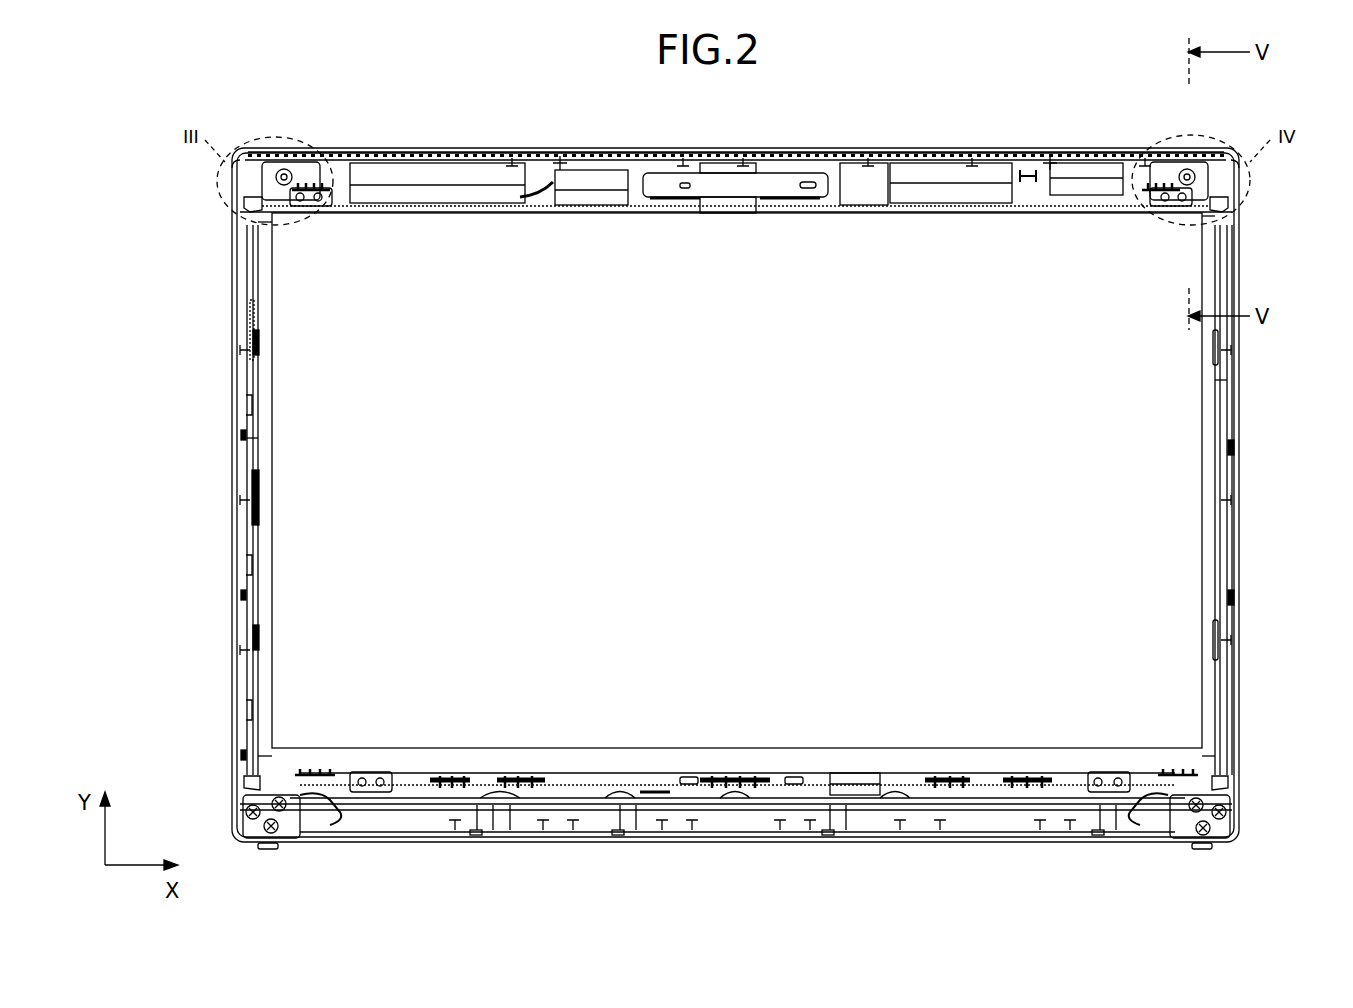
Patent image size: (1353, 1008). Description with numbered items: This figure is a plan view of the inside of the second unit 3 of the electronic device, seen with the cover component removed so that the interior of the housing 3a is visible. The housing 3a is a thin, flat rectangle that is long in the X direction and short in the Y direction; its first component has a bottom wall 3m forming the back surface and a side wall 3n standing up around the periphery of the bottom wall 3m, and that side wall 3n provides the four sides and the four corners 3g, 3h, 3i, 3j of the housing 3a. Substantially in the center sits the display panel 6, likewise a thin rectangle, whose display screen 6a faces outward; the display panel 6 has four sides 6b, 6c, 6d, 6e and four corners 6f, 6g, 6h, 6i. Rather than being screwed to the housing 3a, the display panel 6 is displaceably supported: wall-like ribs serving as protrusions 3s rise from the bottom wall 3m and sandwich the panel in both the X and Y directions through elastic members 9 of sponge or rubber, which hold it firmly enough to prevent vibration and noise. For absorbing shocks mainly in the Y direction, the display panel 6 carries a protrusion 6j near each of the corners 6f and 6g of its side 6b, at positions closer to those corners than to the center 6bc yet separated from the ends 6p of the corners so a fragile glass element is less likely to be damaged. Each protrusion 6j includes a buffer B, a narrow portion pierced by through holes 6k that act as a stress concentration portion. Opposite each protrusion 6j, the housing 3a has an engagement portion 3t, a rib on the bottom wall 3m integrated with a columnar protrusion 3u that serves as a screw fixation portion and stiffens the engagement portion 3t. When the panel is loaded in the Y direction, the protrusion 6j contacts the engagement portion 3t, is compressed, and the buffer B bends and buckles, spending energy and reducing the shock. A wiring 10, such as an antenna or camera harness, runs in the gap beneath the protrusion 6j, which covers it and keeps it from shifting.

The second unit 3 is at (416, 100).
The housing 3a is at (864, 148).
The corner 3g is at (246, 152).
The corner 3h is at (1234, 152).
The corner 3i is at (1236, 843).
The corner 3j is at (233, 843).
The bottom wall 3m is at (1028, 170).
The side wall 3n is at (494, 152).
The protrusion 3s is at (648, 190).
The engagement portion 3t is at (306, 184).
The protrusion 3u is at (284, 172).
The display panel 6 is at (1232, 291).
The display screen 6a is at (1185, 468).
The side 6b is at (574, 192).
The center 6bc is at (723, 214).
The side 6c is at (1215, 380).
The side 6d is at (604, 790).
The side 6e is at (252, 438).
The corner 6f is at (265, 222).
The corner 6g is at (1210, 216).
The corner 6h is at (1205, 756).
The corner 6i is at (268, 756).
The protrusion 6j is at (334, 190).
The through hole 6k is at (318, 202).
The end 6p is at (256, 212).
The elastic member 9 is at (256, 336).
The wiring 10 is at (252, 382).
The buffer B is at (340, 188).